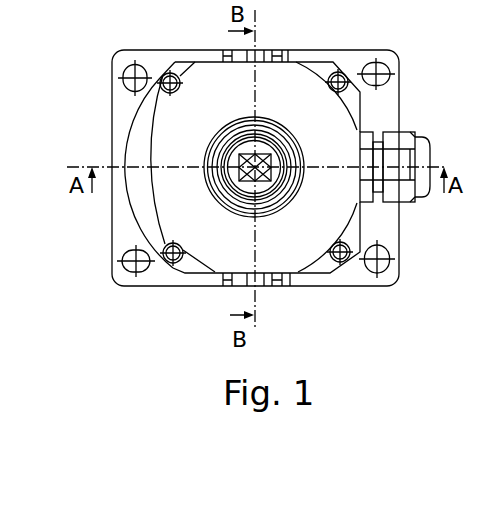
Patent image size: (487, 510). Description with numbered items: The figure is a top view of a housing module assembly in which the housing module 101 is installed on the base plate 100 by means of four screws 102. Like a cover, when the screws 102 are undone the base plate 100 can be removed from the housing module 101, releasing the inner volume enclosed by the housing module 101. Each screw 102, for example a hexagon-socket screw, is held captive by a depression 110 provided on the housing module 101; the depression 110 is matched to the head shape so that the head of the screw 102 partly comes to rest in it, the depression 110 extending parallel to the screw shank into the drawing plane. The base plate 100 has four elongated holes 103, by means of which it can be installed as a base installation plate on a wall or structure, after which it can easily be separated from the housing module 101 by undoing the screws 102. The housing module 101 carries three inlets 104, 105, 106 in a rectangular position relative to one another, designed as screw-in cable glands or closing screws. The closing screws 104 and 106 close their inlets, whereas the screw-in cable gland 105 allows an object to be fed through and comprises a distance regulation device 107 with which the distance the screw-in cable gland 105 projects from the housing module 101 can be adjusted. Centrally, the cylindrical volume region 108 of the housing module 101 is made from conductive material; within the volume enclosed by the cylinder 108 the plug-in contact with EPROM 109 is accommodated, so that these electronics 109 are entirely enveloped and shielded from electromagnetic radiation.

The base plate 100 is at (121, 228).
The housing module 101 is at (300, 257).
The screw 102 is at (343, 69).
The elongated hole 103 is at (128, 71).
The closing screw 104 is at (272, 50).
The screw-in cable gland 105 is at (428, 137).
The closing screw 106 is at (272, 285).
The distance regulation device 107 is at (365, 131).
The cylindrical volume region 108 is at (283, 125).
The plug-in contact with EPROM 109 is at (280, 196).
The depression 110 is at (178, 89).